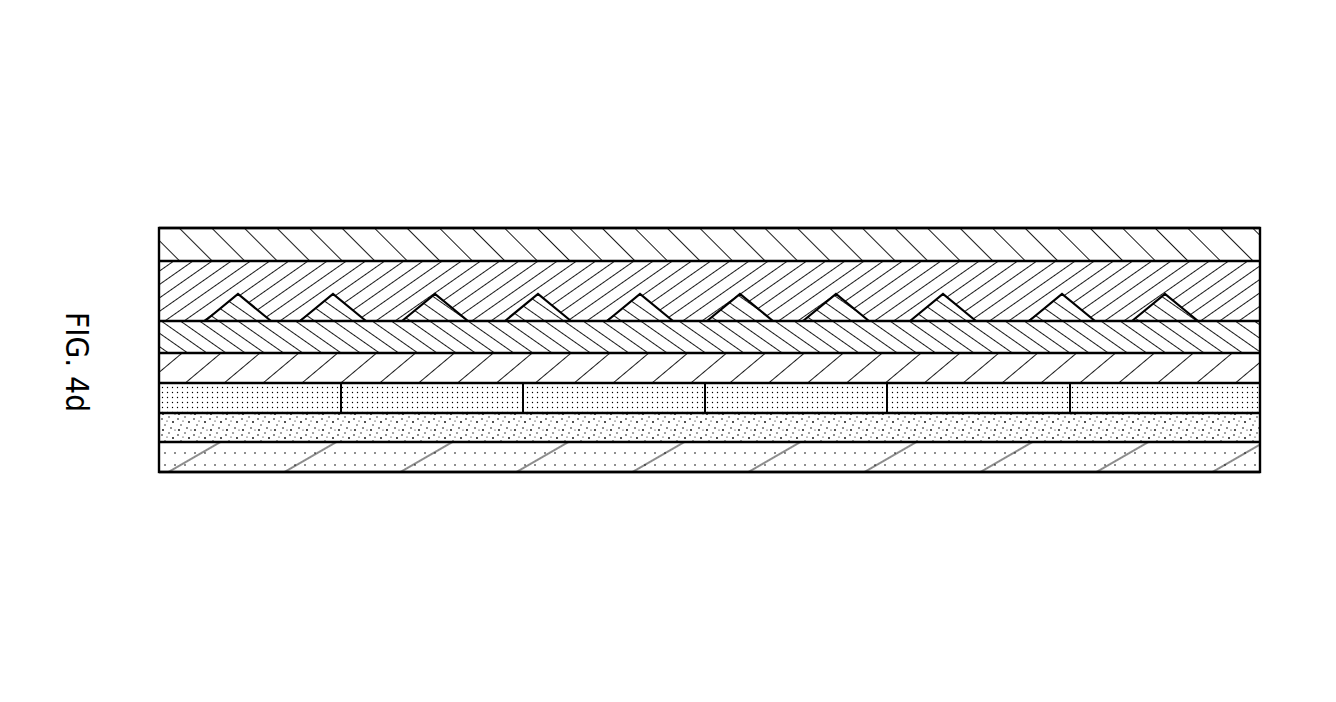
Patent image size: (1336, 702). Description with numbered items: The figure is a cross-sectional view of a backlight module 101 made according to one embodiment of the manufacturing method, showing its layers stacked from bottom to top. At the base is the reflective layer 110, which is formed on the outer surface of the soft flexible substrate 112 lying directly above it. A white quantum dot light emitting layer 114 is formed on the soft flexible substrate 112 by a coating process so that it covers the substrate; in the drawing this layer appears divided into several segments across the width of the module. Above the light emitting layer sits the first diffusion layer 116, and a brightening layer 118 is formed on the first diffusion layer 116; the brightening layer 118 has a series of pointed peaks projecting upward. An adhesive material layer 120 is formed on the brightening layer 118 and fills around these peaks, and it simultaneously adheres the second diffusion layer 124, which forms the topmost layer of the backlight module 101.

The backlight module 101 is at (1220, 206).
The reflective layer 110 is at (1245, 450).
The soft flexible substrate 112 is at (1247, 437).
The white quantum dot light emitting layer 114 is at (1255, 403).
The first diffusion layer 116 is at (1242, 383).
The brightening layer 118 is at (1245, 342).
The adhesive material layer 120 is at (1255, 285).
The second diffusion layer 124 is at (1247, 247).